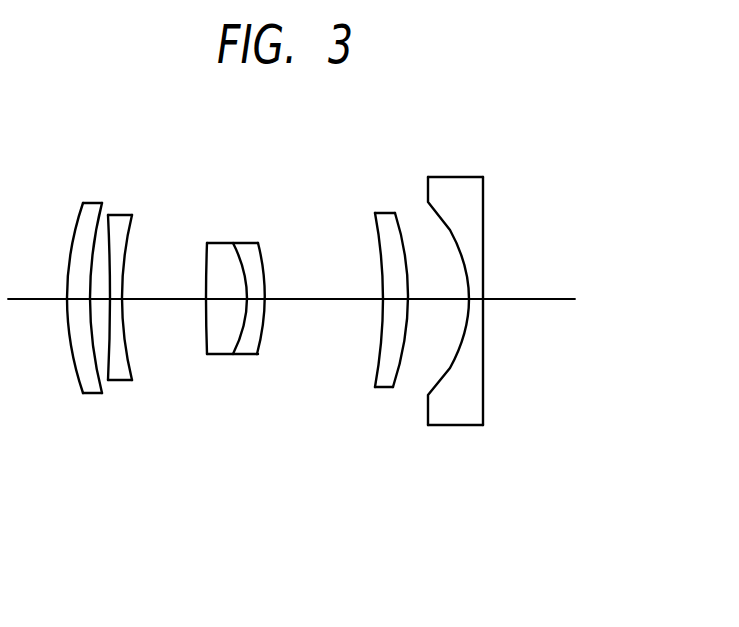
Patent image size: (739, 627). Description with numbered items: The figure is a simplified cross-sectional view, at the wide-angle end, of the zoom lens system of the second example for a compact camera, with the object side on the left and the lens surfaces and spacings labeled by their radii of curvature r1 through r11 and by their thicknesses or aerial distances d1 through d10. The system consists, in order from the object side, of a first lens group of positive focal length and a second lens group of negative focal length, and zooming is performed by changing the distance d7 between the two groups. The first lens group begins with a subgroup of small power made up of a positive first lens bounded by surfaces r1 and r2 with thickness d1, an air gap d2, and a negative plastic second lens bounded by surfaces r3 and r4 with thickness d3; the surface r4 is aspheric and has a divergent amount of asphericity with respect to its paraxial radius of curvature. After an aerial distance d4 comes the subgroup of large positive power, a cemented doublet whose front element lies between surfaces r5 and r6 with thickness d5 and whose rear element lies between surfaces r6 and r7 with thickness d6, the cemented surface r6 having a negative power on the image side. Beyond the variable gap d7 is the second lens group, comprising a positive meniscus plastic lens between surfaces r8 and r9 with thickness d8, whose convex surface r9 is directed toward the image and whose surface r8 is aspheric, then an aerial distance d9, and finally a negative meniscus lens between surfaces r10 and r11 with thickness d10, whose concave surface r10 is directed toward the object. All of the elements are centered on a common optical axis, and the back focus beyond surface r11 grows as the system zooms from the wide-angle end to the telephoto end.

The radius of curvature of first lens surface r1 is at (83, 203).
The radius of curvature of second lens surface r2 is at (102, 203).
The radius of curvature of third lens surface r3 is at (108, 215).
The radius of curvature of fourth lens surface r4 is at (132, 215).
The radius of curvature of fifth lens surface r5 is at (207, 243).
The radius of curvature of sixth lens surface r6 is at (233, 243).
The radius of curvature of seventh lens surface r7 is at (258, 243).
The radius of curvature of eighth lens surface r8 is at (375, 213).
The radius of curvature of ninth lens surface r9 is at (395, 213).
The radius of curvature of tenth lens surface r10 is at (428, 177).
The radius of curvature of eleventh lens surface r11 is at (483, 177).
The thickness of first lens d1 is at (80, 299).
The aerial distance between second and third surfaces d2 is at (102, 299).
The thickness of second lens d3 is at (117, 299).
The aerial distance between fourth and fifth surfaces d4 is at (168, 299).
The thickness of third lens d5 is at (220, 299).
The thickness of fourth lens d6 is at (252, 299).
The aerial distance between first and second lens groups d7 is at (317, 299).
The thickness of positive meniscus lens d8 is at (393, 299).
The aerial distance between ninth and tenth surfaces d9 is at (420, 299).
The thickness of negative meniscus lens d10 is at (477, 299).